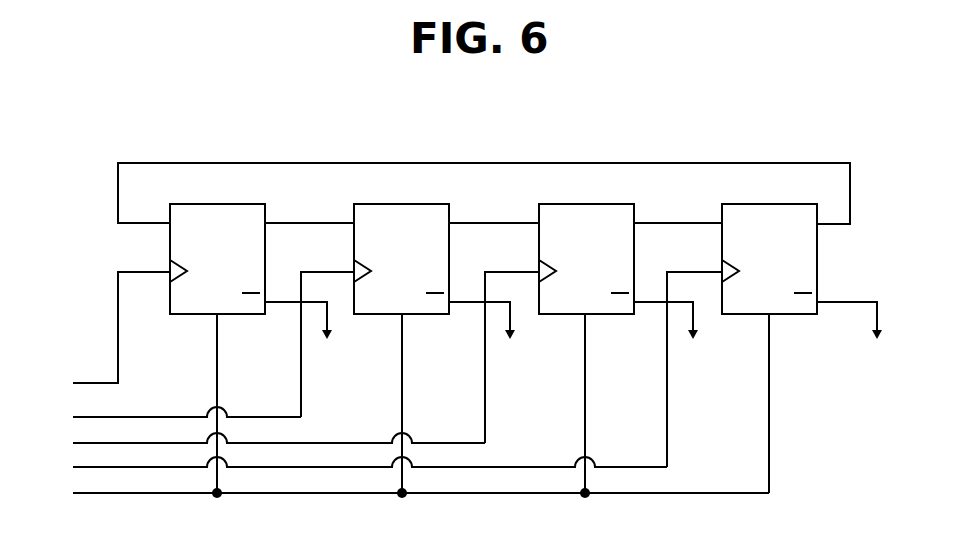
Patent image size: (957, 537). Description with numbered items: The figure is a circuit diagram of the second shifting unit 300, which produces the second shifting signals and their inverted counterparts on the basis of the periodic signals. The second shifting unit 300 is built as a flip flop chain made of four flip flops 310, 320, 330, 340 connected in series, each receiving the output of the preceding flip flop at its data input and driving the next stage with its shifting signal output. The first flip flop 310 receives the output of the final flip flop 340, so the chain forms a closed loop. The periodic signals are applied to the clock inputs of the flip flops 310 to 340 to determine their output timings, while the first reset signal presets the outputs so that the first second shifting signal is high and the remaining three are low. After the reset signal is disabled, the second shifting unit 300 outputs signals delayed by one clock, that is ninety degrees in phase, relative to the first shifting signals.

The second shifting unit 300 is at (878, 147).
The first flip flop 310 is at (240, 203).
The flip flop 320 is at (424, 203).
The flip flop 330 is at (608, 203).
The final flip flop 340 is at (792, 203).